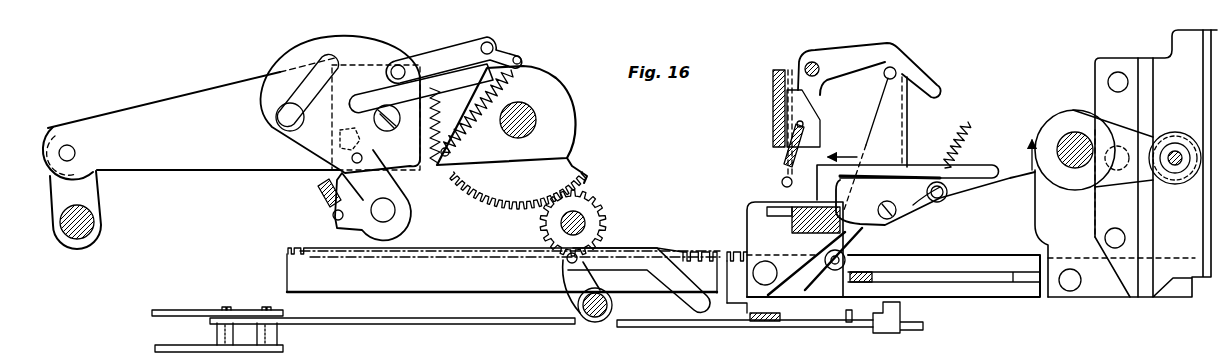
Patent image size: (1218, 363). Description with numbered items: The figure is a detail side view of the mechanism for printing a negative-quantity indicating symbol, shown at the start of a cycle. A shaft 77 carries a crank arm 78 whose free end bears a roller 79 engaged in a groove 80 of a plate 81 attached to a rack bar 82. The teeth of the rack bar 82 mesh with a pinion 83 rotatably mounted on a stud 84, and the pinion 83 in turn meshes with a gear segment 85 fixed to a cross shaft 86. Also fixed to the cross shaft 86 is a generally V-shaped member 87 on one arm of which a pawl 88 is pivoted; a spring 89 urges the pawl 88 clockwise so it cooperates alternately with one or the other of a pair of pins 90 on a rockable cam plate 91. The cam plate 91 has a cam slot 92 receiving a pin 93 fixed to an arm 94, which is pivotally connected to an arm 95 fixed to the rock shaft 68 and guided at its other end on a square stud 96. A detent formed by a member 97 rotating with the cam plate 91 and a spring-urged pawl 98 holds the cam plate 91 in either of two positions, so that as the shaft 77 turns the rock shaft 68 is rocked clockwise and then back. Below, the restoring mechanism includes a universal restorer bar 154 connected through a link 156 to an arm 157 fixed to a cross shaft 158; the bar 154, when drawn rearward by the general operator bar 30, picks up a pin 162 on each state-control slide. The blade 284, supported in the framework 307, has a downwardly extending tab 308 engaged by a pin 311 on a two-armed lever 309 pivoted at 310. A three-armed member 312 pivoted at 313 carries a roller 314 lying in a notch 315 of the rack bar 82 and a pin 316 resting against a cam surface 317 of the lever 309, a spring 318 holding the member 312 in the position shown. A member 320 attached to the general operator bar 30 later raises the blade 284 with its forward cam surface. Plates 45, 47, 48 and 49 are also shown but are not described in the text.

The general operator bar 30 is at (795, 249).
The base plate 45 is at (459, 322).
The bracket 47 is at (886, 335).
The upper plate 48 is at (195, 311).
The lower plate 49 is at (160, 348).
The rock shaft 68 is at (92, 226).
The shaft 77 is at (1076, 132).
The crank arm 78 is at (1123, 126).
The roller 79 is at (1190, 130).
The groove 80 is at (1187, 223).
The plate 81 is at (1098, 210).
The rack bar 82 is at (286, 263).
The pinion 83 is at (598, 222).
The stud 84 is at (580, 214).
The gear segment 85 is at (573, 158).
The cross shaft 86 is at (525, 138).
The V-shaped member 87 is at (530, 72).
The pawl 88 is at (433, 52).
The spring 89 is at (477, 113).
The pins 90 is at (399, 65).
The cam plate 91 is at (288, 145).
The cam slot 92 is at (262, 96).
The pin 93 is at (277, 121).
The arm 94 is at (205, 96).
The arm 95 is at (98, 203).
The square stud 96 is at (380, 195).
The detent member 97 is at (432, 112).
The spring-urged pawl 98 is at (333, 222).
The universal restorer bar 154 is at (782, 308).
The link 156 is at (693, 305).
The arm 157 is at (568, 282).
The cross shaft 158 is at (578, 307).
The pin 162 is at (848, 310).
The blade 284 is at (790, 160).
The framework 307 is at (810, 108).
The tab 308 is at (805, 150).
The two-armed lever 309 is at (864, 50).
The pivot 310 is at (812, 61).
The pin 311 is at (783, 182).
The member 312 is at (908, 140).
The pivot 313 is at (880, 205).
The roller 314 is at (846, 258).
The notch 315 is at (815, 262).
The pin 316 is at (883, 76).
The cam surface 317 is at (875, 145).
The spring 318 is at (966, 130).
The member 320 is at (968, 165).